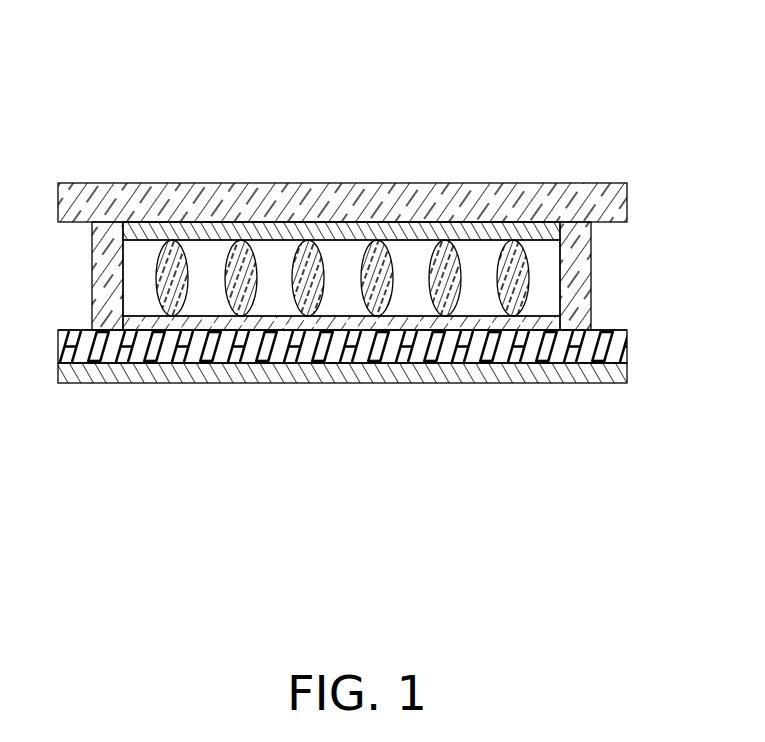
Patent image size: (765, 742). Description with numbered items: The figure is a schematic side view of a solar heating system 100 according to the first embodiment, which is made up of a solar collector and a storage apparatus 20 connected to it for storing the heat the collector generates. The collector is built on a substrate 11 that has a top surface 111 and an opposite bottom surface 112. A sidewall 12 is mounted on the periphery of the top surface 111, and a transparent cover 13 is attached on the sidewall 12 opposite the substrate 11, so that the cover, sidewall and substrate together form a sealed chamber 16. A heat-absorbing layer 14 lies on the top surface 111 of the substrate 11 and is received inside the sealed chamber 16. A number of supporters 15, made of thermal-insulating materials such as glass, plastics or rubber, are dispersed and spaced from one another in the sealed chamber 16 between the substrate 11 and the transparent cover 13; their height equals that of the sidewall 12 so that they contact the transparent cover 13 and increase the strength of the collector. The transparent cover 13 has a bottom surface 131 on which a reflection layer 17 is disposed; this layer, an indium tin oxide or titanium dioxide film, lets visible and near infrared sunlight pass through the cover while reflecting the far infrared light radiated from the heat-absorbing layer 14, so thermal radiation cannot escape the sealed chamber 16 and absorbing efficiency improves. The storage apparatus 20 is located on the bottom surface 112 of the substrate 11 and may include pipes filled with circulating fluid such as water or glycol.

The solar heating system 100 is at (332, 53).
The substrate 11 is at (607, 348).
The top surface 111 is at (608, 331).
The bottom surface 112 is at (122, 365).
The sidewall 12 is at (92, 259).
The transparent cover 13 is at (614, 202).
The bottom surface 131 is at (612, 226).
The heat-absorbing layer 14 is at (138, 318).
The supporters 15 is at (375, 243).
The sealed chamber 16 is at (140, 267).
The reflection layer 17 is at (482, 233).
The storage apparatus 20 is at (606, 374).